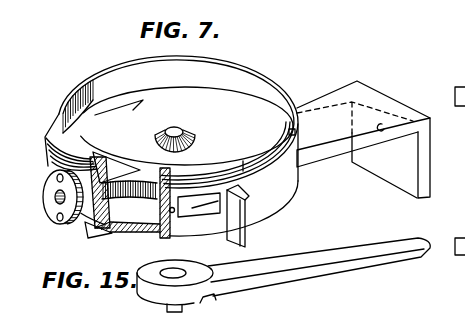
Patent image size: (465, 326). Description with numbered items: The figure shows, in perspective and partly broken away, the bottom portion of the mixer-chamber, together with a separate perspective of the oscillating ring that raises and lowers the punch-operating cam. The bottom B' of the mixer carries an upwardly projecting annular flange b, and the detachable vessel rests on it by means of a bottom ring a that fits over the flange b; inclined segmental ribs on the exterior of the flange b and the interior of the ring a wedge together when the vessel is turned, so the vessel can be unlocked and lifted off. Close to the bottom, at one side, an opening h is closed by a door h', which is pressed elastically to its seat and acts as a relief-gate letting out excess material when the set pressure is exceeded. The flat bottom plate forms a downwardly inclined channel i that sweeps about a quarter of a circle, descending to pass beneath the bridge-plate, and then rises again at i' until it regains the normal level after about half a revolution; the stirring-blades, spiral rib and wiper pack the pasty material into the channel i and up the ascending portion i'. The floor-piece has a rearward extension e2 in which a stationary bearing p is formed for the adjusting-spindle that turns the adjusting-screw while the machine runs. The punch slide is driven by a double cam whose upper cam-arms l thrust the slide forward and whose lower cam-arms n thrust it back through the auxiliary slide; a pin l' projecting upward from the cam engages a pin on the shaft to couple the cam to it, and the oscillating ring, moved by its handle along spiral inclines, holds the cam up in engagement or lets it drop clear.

In FIG. 7, the upper cam-arms l is at (171, 122).
In FIG. 15, the upper cam-arms l is at (176, 286).
In FIG. 7, the pin l' is at (175, 134).
In FIG. 15, the pin l' is at (319, 267).
In FIG. 7, the rearward extension of the floor-piece e2 is at (363, 139).
In FIG. 7, the annular flange b is at (299, 129).
In FIG. 7, the stationary bearing p is at (383, 131).
In FIG. 7, the downwardly-inclined channel i is at (78, 108).
In FIG. 7, the ascending portion of the channel i' is at (129, 200).
In FIG. 7, the bottom ring a is at (108, 176).
In FIG. 7, the lower cam-arms n is at (50, 206).
In FIG. 7, the opening h is at (201, 224).
In FIG. 7, the door h' is at (249, 216).
In FIG. 7, the bottom of the mixer B' is at (189, 181).